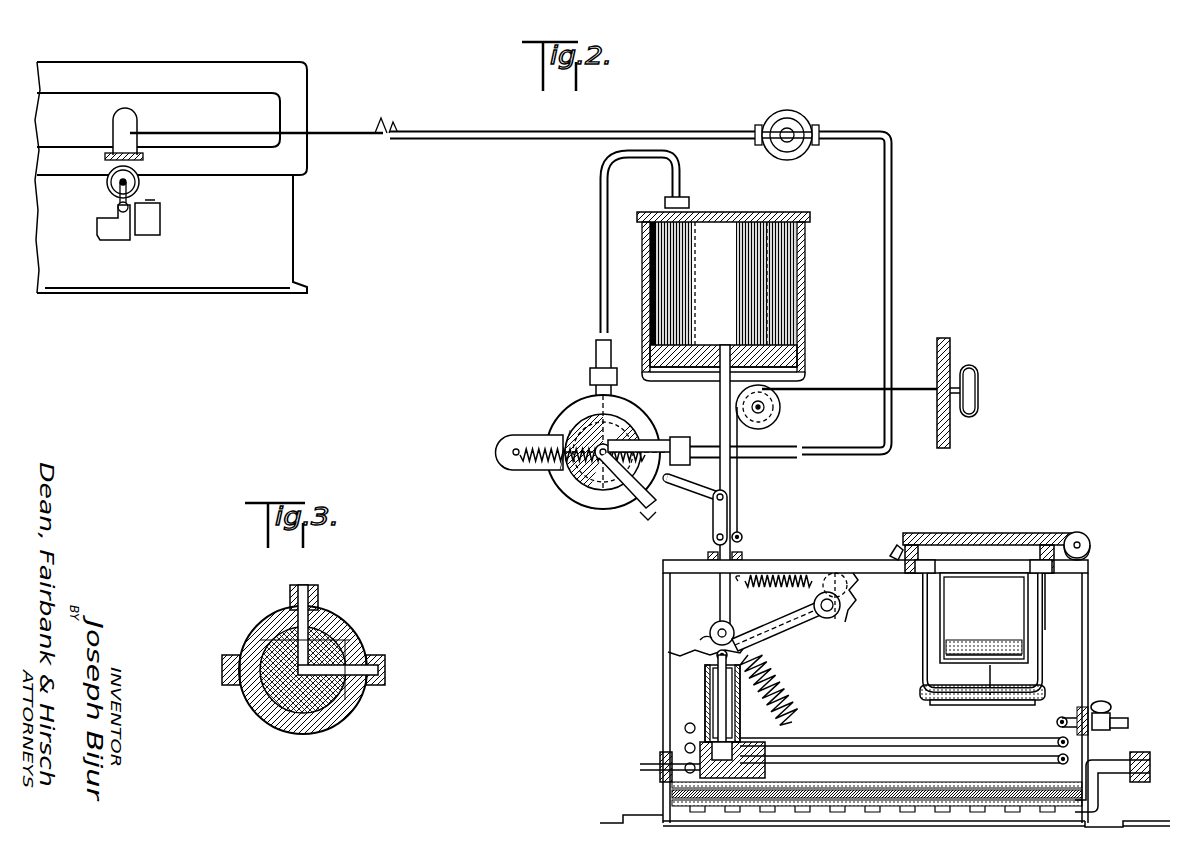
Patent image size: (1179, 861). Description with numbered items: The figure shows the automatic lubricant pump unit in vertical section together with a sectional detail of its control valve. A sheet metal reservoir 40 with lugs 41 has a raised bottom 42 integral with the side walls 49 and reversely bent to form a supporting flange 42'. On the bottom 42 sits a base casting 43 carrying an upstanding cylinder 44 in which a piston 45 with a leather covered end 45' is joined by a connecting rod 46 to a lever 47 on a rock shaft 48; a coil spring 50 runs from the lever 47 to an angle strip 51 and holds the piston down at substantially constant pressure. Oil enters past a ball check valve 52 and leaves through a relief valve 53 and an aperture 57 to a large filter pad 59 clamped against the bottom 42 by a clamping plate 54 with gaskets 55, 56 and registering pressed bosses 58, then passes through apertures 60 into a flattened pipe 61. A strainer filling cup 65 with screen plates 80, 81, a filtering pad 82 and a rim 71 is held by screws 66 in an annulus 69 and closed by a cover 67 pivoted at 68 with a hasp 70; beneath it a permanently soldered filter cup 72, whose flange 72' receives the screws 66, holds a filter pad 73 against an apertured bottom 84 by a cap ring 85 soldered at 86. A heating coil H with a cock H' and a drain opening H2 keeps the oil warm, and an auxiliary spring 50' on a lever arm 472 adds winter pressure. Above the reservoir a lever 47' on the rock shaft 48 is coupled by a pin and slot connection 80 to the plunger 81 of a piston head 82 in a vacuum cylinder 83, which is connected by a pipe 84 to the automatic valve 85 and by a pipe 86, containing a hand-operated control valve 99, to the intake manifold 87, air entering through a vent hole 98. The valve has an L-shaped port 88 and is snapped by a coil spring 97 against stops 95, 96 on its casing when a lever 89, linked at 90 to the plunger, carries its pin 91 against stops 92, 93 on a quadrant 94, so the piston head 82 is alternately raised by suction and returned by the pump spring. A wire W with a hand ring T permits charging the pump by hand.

In FIG. 2, the reservoir 40 is at (1088, 684).
In FIG. 2, the lugs 41 is at (622, 818).
In FIG. 2, the bottom 42 is at (788, 814).
In FIG. 2, the supporting flange 42' is at (600, 826).
In FIG. 2, the base casting 43 is at (690, 766).
In FIG. 2, the cylinder 44 is at (705, 716).
In FIG. 2, the piston 45 is at (660, 747).
In FIG. 2, the leather covered end 45' is at (742, 707).
In FIG. 2, the connecting rod 46 is at (705, 697).
In FIG. 2, the lever 47 is at (781, 624).
In FIG. 2, the lever 47' is at (829, 639).
In FIG. 2, the lever arm 472 is at (831, 574).
In FIG. 2, the rock shaft 48 is at (833, 610).
In FIG. 2, the side walls 49 is at (663, 602).
In FIG. 2, the coil spring 50 is at (780, 690).
In FIG. 2, the auxiliary coil spring 50' is at (774, 561).
In FIG. 2, the metal angle strip 51 is at (806, 782).
In FIG. 2, the ball check valve 52 is at (762, 767).
In FIG. 2, the relief valve 53 is at (745, 806).
In FIG. 2, the clamping plate 54 is at (895, 787).
In FIG. 2, the gasket 55 is at (1098, 796).
In FIG. 2, the gasket 56 is at (1096, 810).
In FIG. 2, the aperture 57 is at (705, 808).
In FIG. 2, the pressed bosses 58 is at (943, 787).
In FIG. 2, the filter pad 59 is at (868, 787).
In FIG. 2, the registering apertures 60 is at (970, 787).
In FIG. 2, the pipe 61 is at (998, 787).
In FIG. 2, the strainer filter cup 65 is at (1026, 598).
In FIG. 2, the screws 66 is at (1047, 545).
In FIG. 2, the cover 67 is at (950, 533).
In FIG. 2, the pivot 68 is at (1090, 546).
In FIG. 2, the annulus 69 is at (1076, 533).
In FIG. 2, the hasp 70 is at (898, 545).
In FIG. 2, the rim 71 is at (940, 658).
In FIG. 2, the filter cup 72 is at (971, 625).
In FIG. 2, the flange 72' is at (1062, 601).
In FIG. 2, the filter pad 73 is at (1012, 700).
In FIG. 2, the pin and slot connection 80 is at (710, 637).
In FIG. 2, the plunger 81 is at (712, 548).
In FIG. 2, the piston head 82 is at (708, 345).
In FIG. 2, the cylinder 83 is at (806, 292).
In FIG. 2, the pipe 84 is at (598, 218).
In FIG. 2, the automatic valve 85 is at (630, 425).
In FIG. 3, the automatic valve 85 is at (300, 705).
In FIG. 2, the pipe 86 is at (1052, 670).
In FIG. 2, the intake manifold 87 is at (183, 107).
In FIG. 3, the L-shaped port 88 is at (298, 655).
In FIG. 2, the lever 89 is at (697, 490).
In FIG. 2, the link 90 is at (727, 513).
In FIG. 2, the pin 91 is at (667, 485).
In FIG. 2, the stop 92 is at (652, 512).
In FIG. 2, the stop 93 is at (682, 448).
In FIG. 2, the quadrant 94 is at (615, 480).
In FIG. 2, the stop 95 is at (550, 478).
In FIG. 2, the stop 96 is at (666, 440).
In FIG. 2, the coil spring 97 is at (582, 488).
In FIG. 2, the vent hole 98 is at (785, 392).
In FIG. 2, the hand-operated control valve 99 is at (784, 122).
In FIG. 2, the wire W is at (922, 395).
In FIG. 2, the hand ring T is at (975, 420).
In FIG. 2, the heating coil H is at (908, 736).
In FIG. 2, the cock H' is at (1106, 706).
In FIG. 2, the drain opening H2 is at (636, 769).